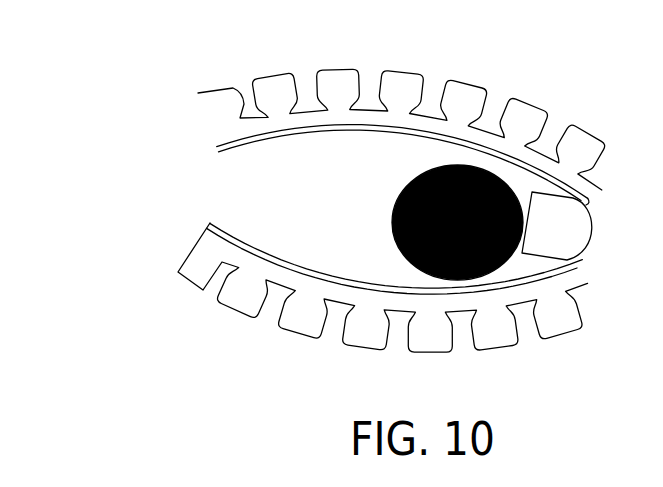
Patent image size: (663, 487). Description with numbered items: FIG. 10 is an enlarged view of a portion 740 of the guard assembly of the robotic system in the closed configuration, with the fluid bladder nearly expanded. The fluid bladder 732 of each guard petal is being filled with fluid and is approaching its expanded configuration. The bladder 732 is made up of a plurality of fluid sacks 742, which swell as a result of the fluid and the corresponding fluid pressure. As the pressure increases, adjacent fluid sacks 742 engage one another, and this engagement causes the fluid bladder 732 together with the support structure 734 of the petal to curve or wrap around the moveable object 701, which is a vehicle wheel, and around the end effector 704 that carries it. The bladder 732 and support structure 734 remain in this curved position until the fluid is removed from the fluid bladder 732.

The portion 740 is at (329, 183).
The fluid sacks 742 is at (208, 102).
The fluid bladder 732 is at (182, 139).
The support structure 734 is at (218, 151).
The end effector 704 is at (532, 194).
The moveable object 701 is at (394, 217).